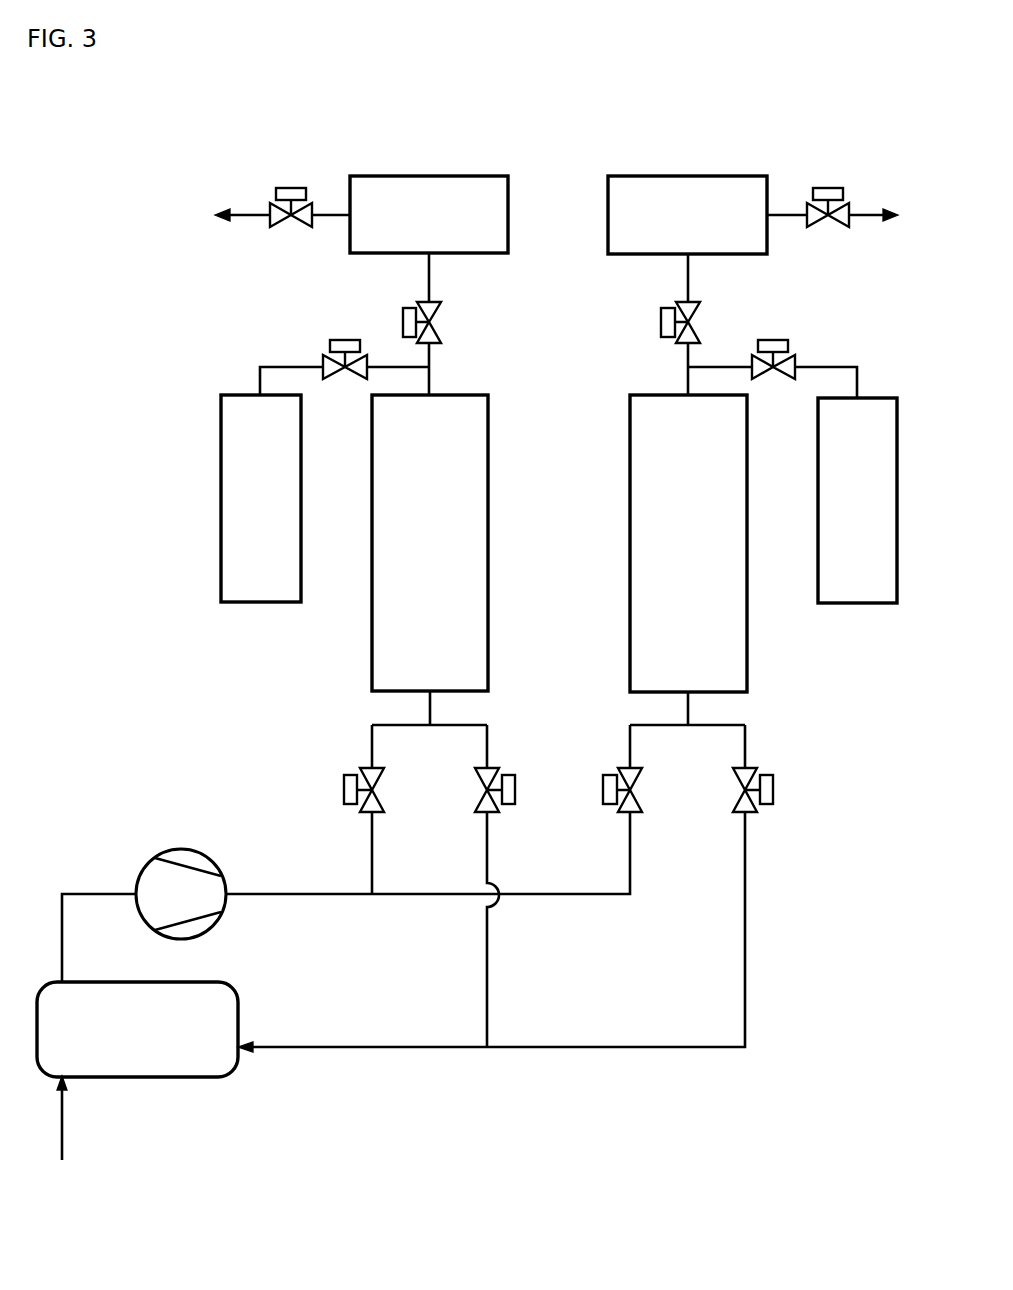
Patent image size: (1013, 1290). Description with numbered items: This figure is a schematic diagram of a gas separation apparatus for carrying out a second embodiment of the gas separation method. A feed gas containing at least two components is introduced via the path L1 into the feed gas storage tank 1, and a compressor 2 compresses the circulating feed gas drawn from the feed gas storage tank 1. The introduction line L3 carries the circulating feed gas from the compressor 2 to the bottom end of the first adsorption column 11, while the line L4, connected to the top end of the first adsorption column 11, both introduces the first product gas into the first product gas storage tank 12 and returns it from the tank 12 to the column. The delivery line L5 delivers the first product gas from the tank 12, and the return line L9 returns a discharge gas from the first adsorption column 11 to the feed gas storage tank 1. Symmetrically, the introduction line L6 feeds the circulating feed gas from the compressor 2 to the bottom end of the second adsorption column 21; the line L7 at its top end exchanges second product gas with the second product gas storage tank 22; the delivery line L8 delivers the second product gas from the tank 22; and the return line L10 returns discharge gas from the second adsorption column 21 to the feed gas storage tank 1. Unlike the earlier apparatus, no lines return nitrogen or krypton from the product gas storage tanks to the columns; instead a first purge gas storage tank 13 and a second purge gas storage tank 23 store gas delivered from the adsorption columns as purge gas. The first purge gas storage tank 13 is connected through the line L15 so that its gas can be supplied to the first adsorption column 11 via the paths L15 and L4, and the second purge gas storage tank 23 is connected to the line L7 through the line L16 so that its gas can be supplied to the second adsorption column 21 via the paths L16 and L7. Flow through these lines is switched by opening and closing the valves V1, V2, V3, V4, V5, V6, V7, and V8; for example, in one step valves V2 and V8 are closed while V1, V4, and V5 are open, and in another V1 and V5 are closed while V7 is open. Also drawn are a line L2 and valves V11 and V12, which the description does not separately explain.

The feed gas storage tank 1 is at (210, 1079).
The compressor 2 is at (182, 848).
The first adsorption column 11 is at (372, 545).
The first product gas storage tank 12 is at (431, 175).
The first purge gas storage tank 13 is at (261, 604).
The second adsorption column 21 is at (747, 545).
The second product gas storage tank 22 is at (689, 175).
The second purge gas storage tank 23 is at (857, 605).
The valve V1 is at (344, 787).
The valve V2 is at (403, 322).
The valve V3 is at (292, 187).
The valve V4 is at (606, 775).
The valve V5 is at (661, 322).
The valve V6 is at (828, 187).
The valve V7 is at (509, 775).
The valve V8 is at (774, 788).
The valve V11 is at (344, 340).
The valve V12 is at (775, 340).
The path L1 is at (62, 1125).
The compressor inlet line L2 is at (99, 892).
The introduction line L3 is at (372, 850).
The line L4 is at (429, 280).
The delivery line L5 is at (254, 217).
The introduction line L6 is at (630, 856).
The line L7 is at (688, 278).
The delivery line L8 is at (863, 219).
The return line L9 is at (487, 856).
The return line L10 is at (746, 930).
The line L15 is at (262, 367).
The line L16 is at (857, 366).